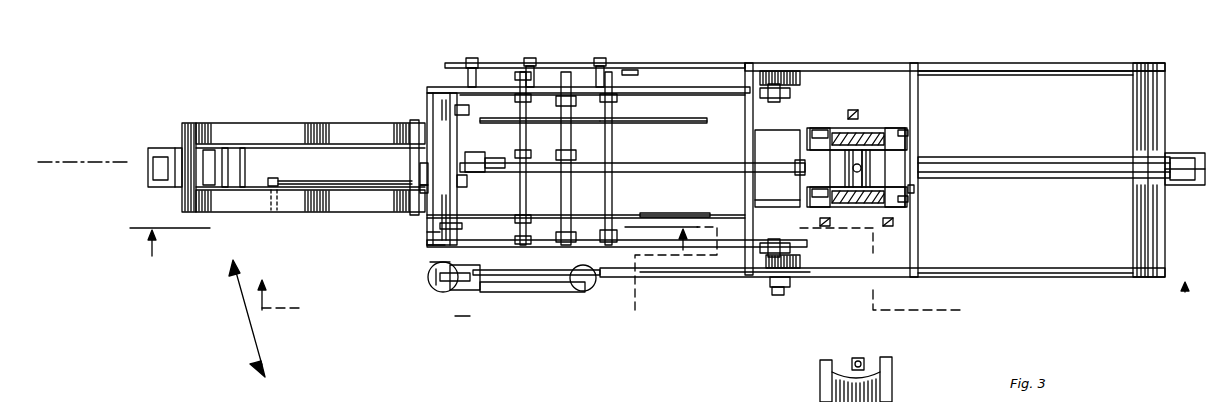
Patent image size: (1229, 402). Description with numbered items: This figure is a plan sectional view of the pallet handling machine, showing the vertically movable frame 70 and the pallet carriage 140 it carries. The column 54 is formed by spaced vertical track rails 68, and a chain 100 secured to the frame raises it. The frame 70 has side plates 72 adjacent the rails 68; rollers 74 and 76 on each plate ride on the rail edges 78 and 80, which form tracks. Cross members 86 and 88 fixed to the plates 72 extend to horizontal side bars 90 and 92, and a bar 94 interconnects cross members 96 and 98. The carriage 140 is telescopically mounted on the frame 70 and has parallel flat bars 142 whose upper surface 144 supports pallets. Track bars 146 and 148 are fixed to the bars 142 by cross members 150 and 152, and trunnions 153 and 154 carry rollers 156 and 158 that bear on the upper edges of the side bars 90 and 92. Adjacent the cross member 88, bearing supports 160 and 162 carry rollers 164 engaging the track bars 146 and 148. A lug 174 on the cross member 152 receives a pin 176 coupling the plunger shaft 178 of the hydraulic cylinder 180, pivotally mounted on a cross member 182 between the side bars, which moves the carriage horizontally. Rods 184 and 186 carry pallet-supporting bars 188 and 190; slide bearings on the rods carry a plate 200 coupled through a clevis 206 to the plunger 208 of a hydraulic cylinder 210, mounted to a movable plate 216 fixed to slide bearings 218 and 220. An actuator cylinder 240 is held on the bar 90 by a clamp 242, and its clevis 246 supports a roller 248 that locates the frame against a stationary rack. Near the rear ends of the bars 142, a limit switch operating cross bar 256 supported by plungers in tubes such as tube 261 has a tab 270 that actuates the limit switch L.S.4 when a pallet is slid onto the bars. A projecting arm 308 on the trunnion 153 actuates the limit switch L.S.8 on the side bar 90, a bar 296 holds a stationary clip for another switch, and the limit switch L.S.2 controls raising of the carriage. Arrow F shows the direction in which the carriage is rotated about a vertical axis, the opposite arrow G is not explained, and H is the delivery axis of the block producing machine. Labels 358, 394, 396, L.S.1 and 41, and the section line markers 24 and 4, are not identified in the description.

The delivery axis H is at (103, 164).
The end cap 358 is at (178, 149).
The flat bar 142 is at (277, 124).
The horizontal upper surface 144 is at (372, 124).
The rod 394 is at (320, 178).
The pin 396 is at (283, 211).
The rearwardly extending tab 270 is at (420, 118).
The limit switch operating cross bar 256 is at (420, 167).
The limit switch L.S.2 is at (420, 178).
The pallet carriage 140 is at (430, 90).
The trunnion 154 is at (445, 67).
The roller 158 is at (474, 60).
The slide bearing 218 is at (545, 56).
The slide bearing 220 is at (602, 58).
The movable plate 216 is at (630, 67).
The cross member 88 is at (740, 70).
The bearing support 162 is at (796, 70).
The horizontal side bar 92 is at (1068, 70).
The horizontal side bar 90 is at (1095, 262).
The cross member 86 is at (918, 100).
The cross member 182 is at (1154, 140).
The hydraulic cylinder 180 is at (1082, 147).
The side plate 72 is at (860, 130).
The edge 78 is at (854, 170).
The vertical track rail 68 is at (872, 154).
The bar 296 is at (852, 109).
The edge 80 is at (830, 222).
The roller 74 is at (907, 132).
The roller 76 is at (808, 130).
The vertically movable frame 70 is at (924, 137).
The cross member 98 is at (794, 150).
The bar 94 is at (796, 190).
The cross member 96 is at (916, 190).
The plunger shaft 178 is at (688, 157).
The bar 188 is at (675, 121).
The rod 184 is at (520, 122).
The rod 186 is at (610, 124).
The track bar 146 is at (678, 90).
The limit switch L.S.4 is at (462, 111).
The lug 174 is at (490, 148).
The pin 176 is at (458, 185).
The tube 261 is at (460, 226).
The plunger 208 is at (564, 204).
The hydraulic cylinder 210 is at (597, 160).
The clevis 206 is at (606, 238).
The roller 156 is at (470, 248).
The track bar 148 is at (722, 232).
The bar 190 is at (648, 214).
The plate 200 is at (664, 270).
The roller 164 is at (787, 99).
The bearing support 160 is at (798, 275).
The limit switch L.S.8 is at (778, 292).
The actuator cylinder 240 is at (547, 292).
The clamp 242 is at (508, 294).
The clevis 246 is at (475, 290).
The projecting arm 308 is at (470, 317).
The roller 248 is at (436, 291).
The limit switch 1 L.S.1 is at (433, 280).
The shaft 41 is at (421, 277).
The trunnion 153 is at (438, 262).
The cross member 152 is at (433, 246).
The cross member 150 is at (425, 234).
The section line 24- 24 is at (501, 268).
The section line 4 is at (722, 279).
The direction G is at (235, 312).
The direction F is at (248, 370).
The chain 100 is at (858, 358).
The column 54 is at (881, 392).